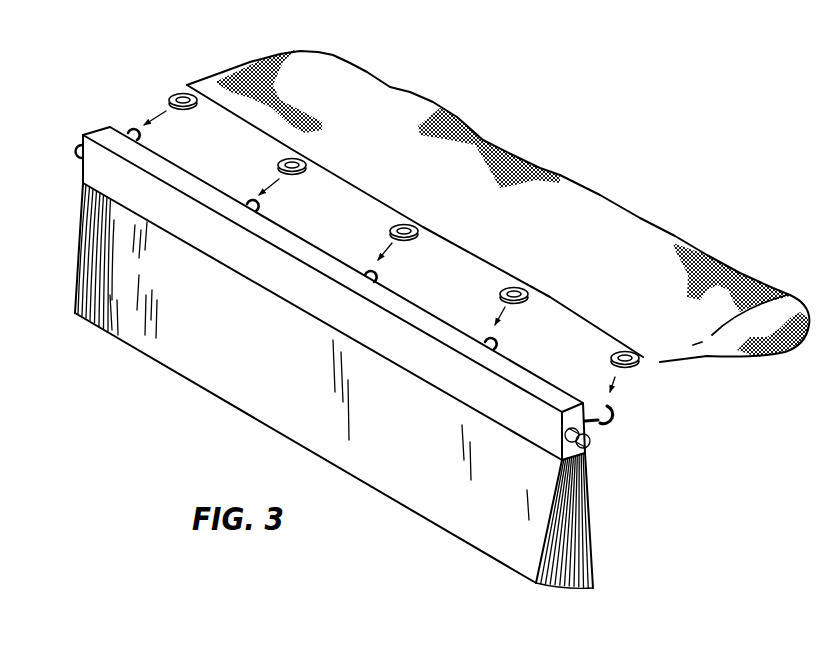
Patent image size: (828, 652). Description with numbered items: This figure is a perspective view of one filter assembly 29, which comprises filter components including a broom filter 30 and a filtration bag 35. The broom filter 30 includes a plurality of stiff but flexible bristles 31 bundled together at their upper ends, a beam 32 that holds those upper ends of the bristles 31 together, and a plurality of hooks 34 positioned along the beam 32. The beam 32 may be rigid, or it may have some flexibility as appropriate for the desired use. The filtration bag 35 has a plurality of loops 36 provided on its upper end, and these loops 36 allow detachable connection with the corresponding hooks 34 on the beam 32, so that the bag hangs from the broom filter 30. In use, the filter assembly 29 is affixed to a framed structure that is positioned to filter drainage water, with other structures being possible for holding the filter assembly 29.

The filter assembly 29 is at (129, 67).
The broom filter 30 is at (116, 354).
The bristles 31 is at (202, 368).
The beam 32 is at (92, 172).
The hooks 34 is at (134, 124).
The filtration bag 35 is at (325, 65).
The loops 36 is at (172, 93).